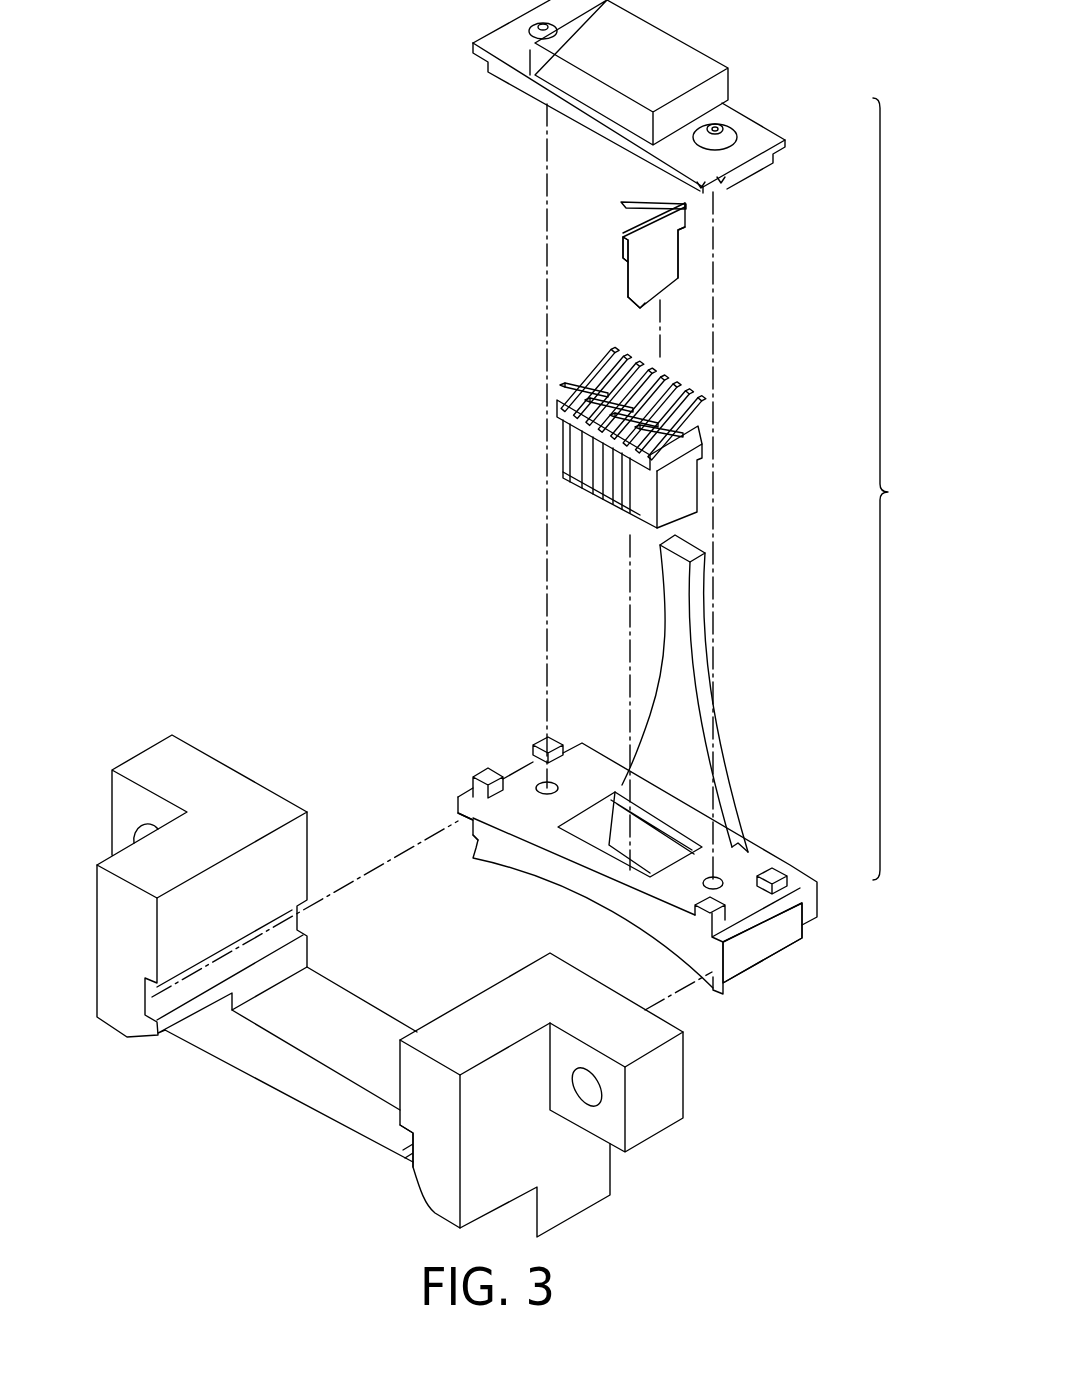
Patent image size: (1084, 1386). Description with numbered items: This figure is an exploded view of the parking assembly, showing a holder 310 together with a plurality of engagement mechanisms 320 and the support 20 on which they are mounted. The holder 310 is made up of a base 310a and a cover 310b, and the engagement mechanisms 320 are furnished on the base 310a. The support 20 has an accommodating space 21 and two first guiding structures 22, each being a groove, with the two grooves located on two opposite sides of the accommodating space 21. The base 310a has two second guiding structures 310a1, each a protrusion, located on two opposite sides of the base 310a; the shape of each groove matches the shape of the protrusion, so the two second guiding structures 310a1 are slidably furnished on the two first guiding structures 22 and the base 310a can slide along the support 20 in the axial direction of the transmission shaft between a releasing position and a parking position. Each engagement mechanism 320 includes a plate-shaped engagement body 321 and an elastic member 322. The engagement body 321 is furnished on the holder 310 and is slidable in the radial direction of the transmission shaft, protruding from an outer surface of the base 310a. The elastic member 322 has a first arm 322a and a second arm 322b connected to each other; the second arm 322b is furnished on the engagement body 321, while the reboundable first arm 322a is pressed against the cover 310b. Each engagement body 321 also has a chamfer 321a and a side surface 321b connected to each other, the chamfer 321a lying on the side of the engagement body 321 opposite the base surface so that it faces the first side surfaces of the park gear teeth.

The support 20 is at (668, 1092).
The accommodating space 21 is at (336, 1032).
The first guiding structure 22 is at (284, 953).
The holder 310 is at (740, 490).
The base 310a is at (619, 772).
The second guiding structure 310a1 is at (458, 803).
The cover 310b is at (760, 137).
The engagement mechanism 320 is at (596, 279).
The engagement body 321 is at (673, 251).
The chamfer 321a is at (612, 320).
The side surface 321b is at (662, 282).
The elastic member 322 is at (590, 324).
The first arm 322a is at (630, 201).
The second arm 322b is at (630, 233).